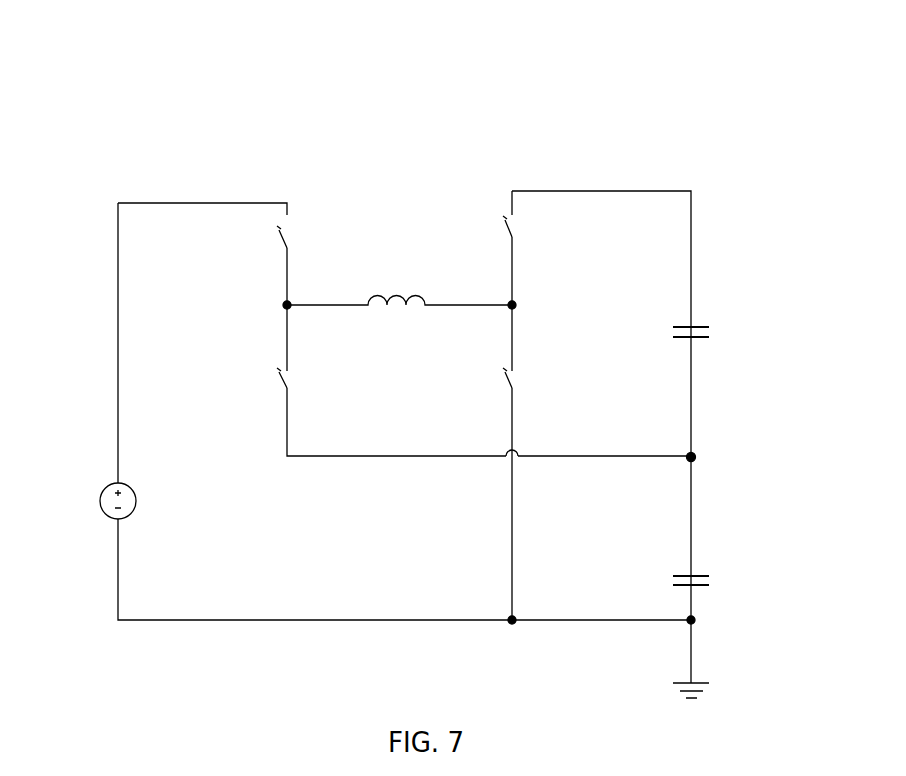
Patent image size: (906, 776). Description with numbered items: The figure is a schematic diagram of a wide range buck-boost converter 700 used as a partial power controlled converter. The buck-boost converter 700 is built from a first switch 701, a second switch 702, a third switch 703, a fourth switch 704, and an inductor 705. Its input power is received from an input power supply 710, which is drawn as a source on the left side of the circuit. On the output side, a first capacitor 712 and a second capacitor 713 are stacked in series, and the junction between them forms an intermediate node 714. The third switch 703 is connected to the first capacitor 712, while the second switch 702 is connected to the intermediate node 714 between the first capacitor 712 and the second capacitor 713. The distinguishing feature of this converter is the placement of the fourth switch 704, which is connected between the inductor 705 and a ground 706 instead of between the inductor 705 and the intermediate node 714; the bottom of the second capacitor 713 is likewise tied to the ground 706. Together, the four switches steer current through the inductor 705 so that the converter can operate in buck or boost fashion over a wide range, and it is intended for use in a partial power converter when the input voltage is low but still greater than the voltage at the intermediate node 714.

The wide range buck-boost converter 700 is at (133, 125).
The first switch 701 is at (278, 243).
The second switch 702 is at (280, 388).
The third switch 703 is at (497, 228).
The fourth switch 704 is at (505, 388).
The inductor 705 is at (405, 287).
The ground 706 is at (691, 658).
The input power supply 710 is at (103, 510).
The first capacitor 712 is at (697, 318).
The second capacitor 713 is at (697, 566).
The intermediate node 714 is at (691, 457).